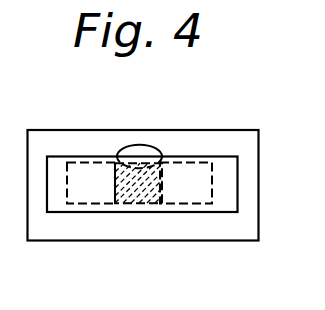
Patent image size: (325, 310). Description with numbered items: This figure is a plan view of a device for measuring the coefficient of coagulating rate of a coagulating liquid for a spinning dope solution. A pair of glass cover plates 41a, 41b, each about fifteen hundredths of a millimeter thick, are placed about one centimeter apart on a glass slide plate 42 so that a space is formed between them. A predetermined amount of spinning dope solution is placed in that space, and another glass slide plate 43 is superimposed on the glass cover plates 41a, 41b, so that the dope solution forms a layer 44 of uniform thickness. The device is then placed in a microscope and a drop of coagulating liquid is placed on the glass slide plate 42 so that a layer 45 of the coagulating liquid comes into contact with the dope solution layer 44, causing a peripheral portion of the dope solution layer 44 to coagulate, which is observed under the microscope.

The glass cover plate 41a is at (83, 167).
The glass cover plate 41b is at (188, 167).
The glass slide plate 42 is at (190, 233).
The glass slide plate 43 is at (230, 200).
The layer of the dope solution 44 is at (132, 200).
The layer of the coagulating liquid 45 is at (143, 148).